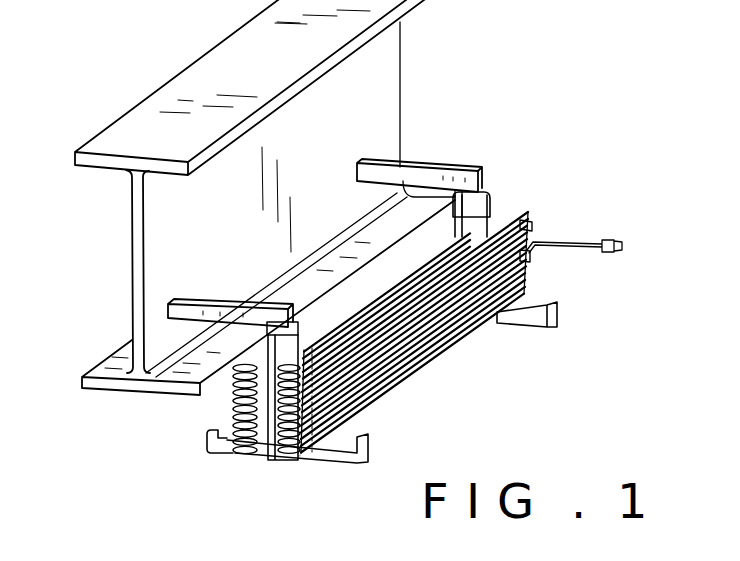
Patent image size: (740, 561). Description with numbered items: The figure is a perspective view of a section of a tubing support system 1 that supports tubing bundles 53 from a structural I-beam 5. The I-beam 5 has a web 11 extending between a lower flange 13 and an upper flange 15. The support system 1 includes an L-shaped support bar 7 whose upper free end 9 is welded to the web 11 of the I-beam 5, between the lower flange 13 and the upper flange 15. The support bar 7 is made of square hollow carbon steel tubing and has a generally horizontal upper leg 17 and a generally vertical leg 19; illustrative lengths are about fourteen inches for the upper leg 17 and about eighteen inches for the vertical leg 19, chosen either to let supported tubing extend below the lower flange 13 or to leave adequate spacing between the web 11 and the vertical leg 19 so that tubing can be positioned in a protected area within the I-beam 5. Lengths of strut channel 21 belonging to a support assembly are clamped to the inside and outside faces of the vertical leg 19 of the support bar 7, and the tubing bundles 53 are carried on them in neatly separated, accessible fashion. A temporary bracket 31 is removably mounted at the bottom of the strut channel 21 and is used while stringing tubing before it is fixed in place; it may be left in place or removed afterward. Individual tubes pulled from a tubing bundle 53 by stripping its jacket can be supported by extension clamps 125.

The tubing support system 1 is at (233, 467).
The structural I-beam 5 is at (249, 216).
The support bar 7 is at (320, 309).
The upper free end 9 is at (168, 310).
The web 11 is at (132, 292).
The lower flange 13 is at (112, 392).
The upper flange 15 is at (97, 170).
The upper leg 17 is at (443, 167).
The vertical leg 19 is at (426, 198).
The strut channel 21 is at (494, 198).
The temporary bracket 31 is at (518, 330).
The tubing bundles 53 is at (350, 337).
The extension clamps 125 is at (532, 216).